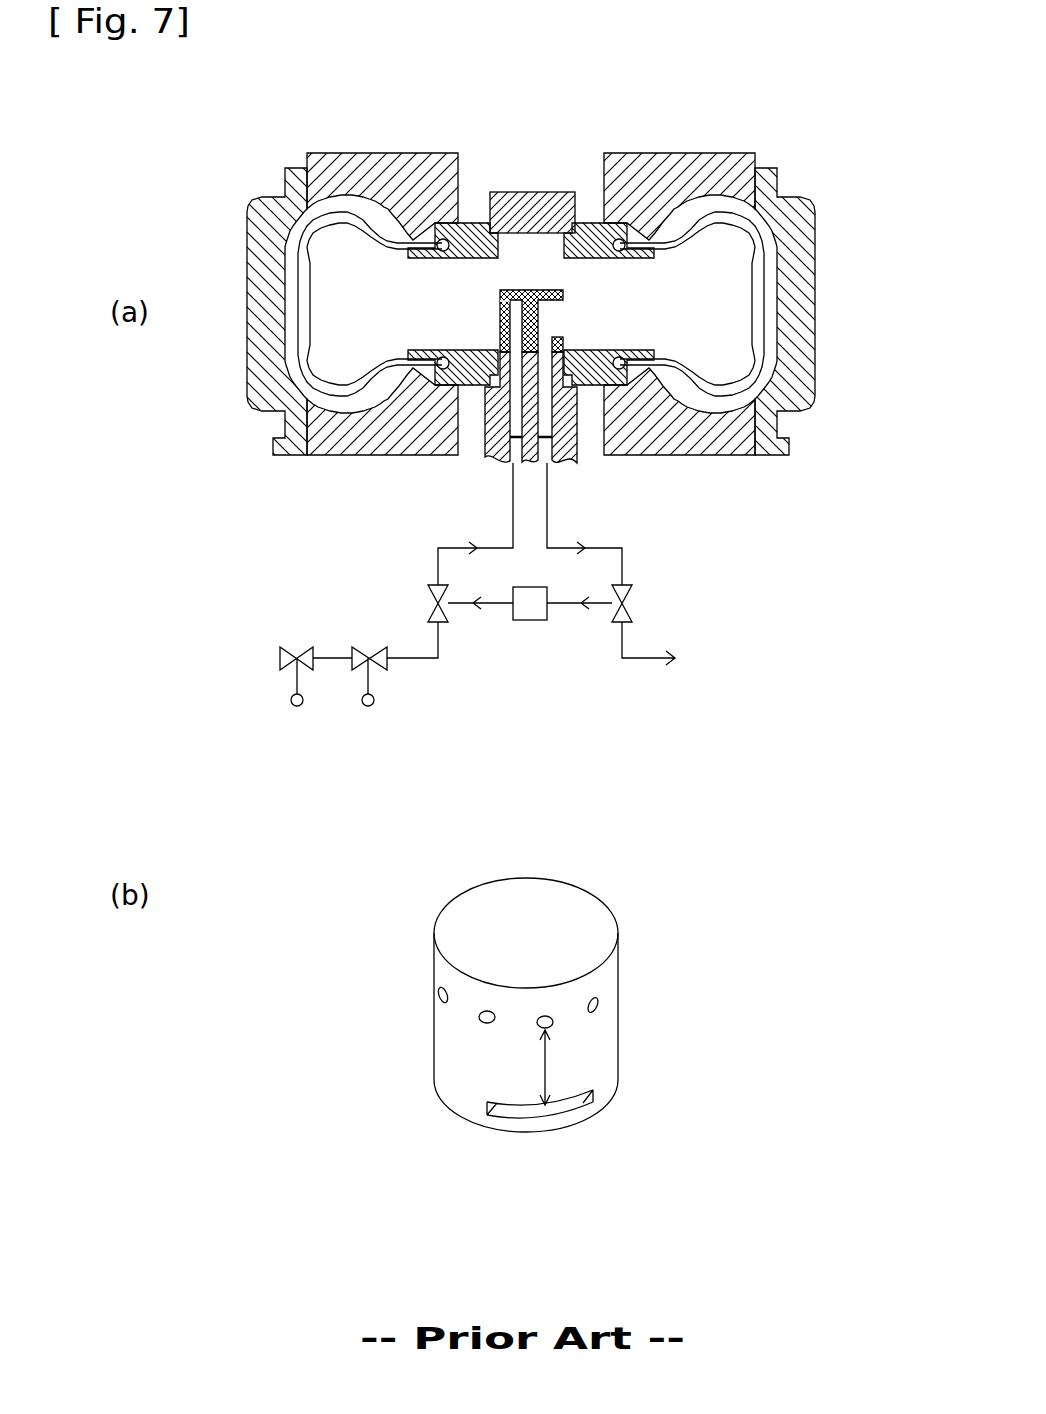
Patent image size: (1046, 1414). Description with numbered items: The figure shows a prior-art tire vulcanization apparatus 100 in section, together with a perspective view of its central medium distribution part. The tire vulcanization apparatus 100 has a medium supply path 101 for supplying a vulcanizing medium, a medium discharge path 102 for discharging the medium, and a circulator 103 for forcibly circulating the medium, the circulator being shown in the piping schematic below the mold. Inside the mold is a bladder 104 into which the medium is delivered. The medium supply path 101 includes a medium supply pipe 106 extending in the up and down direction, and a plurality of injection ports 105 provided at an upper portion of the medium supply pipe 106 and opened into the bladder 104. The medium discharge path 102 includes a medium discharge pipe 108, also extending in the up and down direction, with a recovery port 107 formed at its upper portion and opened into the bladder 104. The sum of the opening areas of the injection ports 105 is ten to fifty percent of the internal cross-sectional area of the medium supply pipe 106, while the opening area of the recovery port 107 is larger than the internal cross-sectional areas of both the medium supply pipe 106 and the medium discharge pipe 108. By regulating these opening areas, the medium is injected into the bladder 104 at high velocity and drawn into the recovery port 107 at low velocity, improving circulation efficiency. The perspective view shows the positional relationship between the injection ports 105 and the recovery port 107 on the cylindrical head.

The tire vulcanization apparatus 100 is at (758, 129).
The medium supply path 101 is at (438, 582).
The medium discharge path 102 is at (622, 582).
The circulator 103 is at (545, 620).
The bladder 104 is at (752, 262).
The injection ports 105 is at (558, 303).
The medium supply pipe 106 is at (518, 428).
The recovery port 107 is at (555, 338).
The medium discharge pipe 108 is at (543, 428).